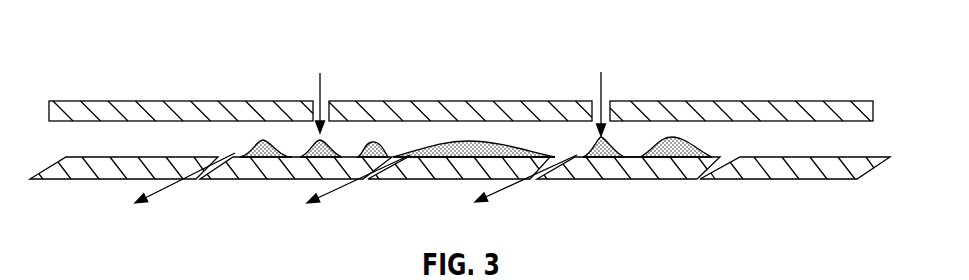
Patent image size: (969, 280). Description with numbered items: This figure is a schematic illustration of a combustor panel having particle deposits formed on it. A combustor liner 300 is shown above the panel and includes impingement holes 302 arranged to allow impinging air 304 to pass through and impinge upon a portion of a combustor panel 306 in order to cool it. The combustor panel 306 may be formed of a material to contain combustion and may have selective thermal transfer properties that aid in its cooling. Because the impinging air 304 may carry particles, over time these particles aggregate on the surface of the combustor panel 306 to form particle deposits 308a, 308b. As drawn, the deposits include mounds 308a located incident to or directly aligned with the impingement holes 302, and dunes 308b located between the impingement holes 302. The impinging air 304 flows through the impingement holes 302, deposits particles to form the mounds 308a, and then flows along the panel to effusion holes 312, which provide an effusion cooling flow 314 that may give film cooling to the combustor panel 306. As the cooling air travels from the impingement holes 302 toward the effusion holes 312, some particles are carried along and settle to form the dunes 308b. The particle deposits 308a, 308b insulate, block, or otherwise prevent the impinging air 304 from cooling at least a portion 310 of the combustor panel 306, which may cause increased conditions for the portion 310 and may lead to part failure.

The combustor liner 300 is at (470, 101).
The impingement holes 302 is at (313, 100).
The impinging air 304 is at (598, 90).
The combustor panel 306 is at (806, 162).
The mounds 308a is at (330, 134).
The dunes 308b is at (258, 141).
The portion of the combustor panel 310 is at (444, 160).
The effusion holes 312 is at (193, 180).
The effusion cooling flow 314 is at (497, 192).